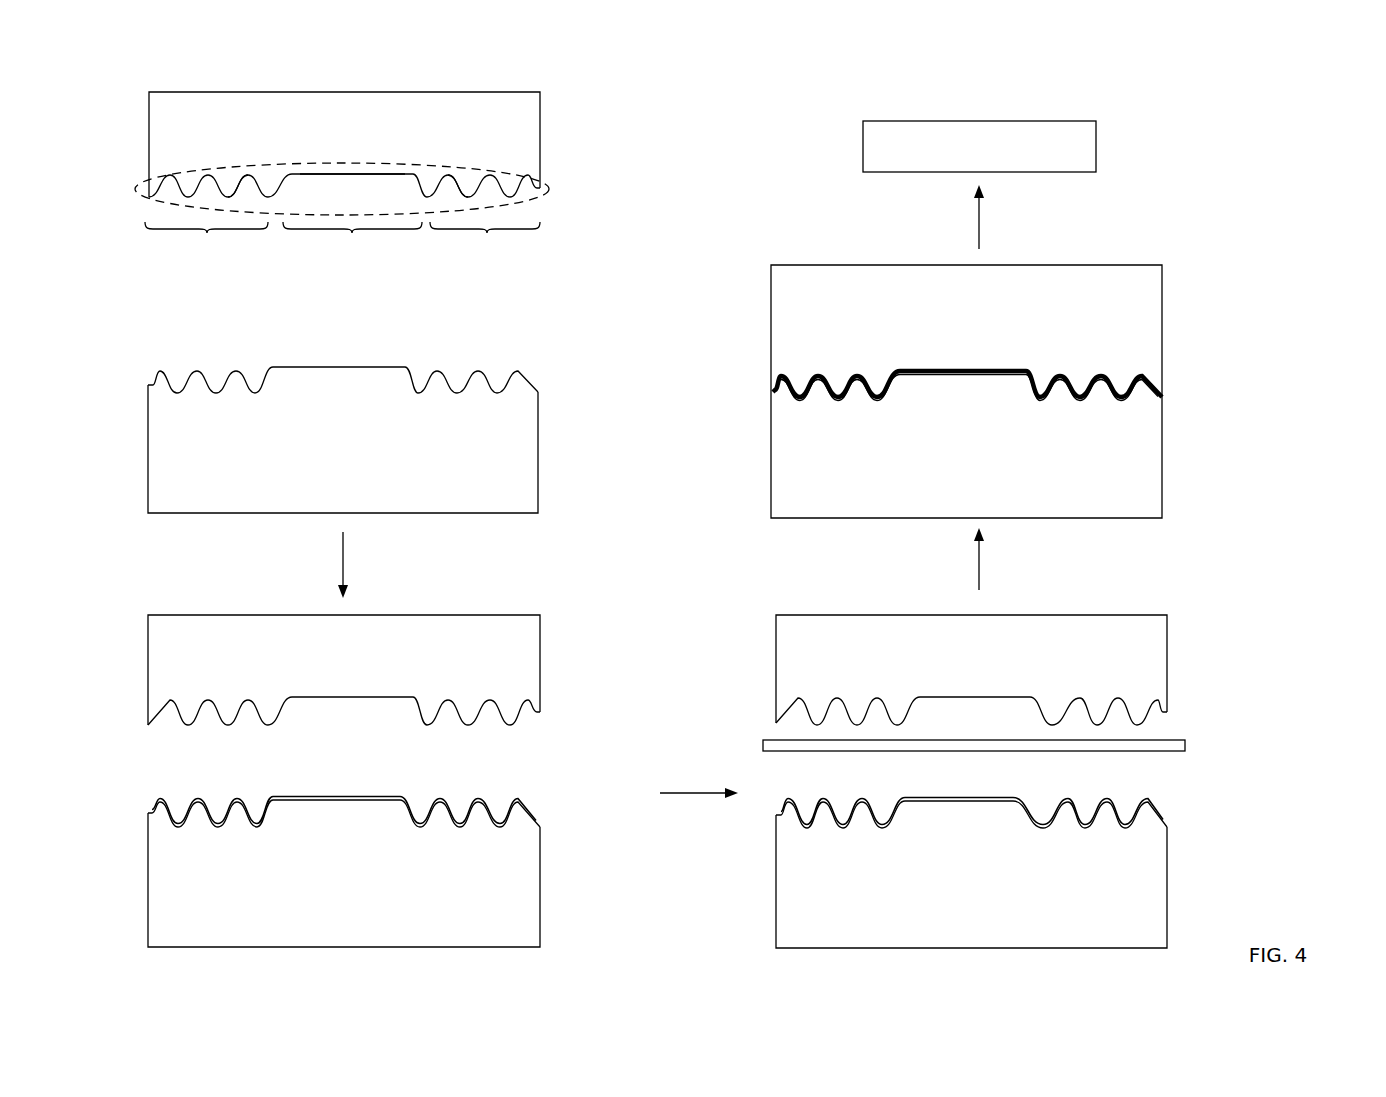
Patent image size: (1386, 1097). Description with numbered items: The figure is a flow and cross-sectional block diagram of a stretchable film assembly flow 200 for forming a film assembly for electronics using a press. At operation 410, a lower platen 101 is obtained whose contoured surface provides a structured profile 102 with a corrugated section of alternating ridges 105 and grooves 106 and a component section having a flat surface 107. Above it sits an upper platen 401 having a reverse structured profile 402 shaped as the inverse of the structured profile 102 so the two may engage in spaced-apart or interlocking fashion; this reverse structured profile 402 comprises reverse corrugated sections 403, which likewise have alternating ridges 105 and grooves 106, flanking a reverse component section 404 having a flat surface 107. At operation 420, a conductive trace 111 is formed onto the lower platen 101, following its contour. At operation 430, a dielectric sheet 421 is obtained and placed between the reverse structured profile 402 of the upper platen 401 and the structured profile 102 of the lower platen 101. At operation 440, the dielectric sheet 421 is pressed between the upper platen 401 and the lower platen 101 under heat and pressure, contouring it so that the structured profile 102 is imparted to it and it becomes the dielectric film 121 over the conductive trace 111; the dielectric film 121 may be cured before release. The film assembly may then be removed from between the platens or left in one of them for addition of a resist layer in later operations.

The stretchable film assembly flow 200 is at (205, 72).
The operation 410 is at (668, 88).
The operation 420 is at (660, 595).
The operation 430 is at (1288, 595).
The operation 440 is at (1306, 243).
The upper platen 401 is at (540, 135).
The lower platen 101 is at (713, 657).
The structured profile 102 is at (343, 423).
The reverse structured profile 402 is at (545, 190).
The reverse corrugated section 403 is at (344, 280).
The reverse component section 404 is at (352, 280).
The ridge 105 is at (234, 186).
The groove 106 is at (428, 149).
The flat surface 107 is at (347, 162).
The conductive trace 111 is at (1197, 790).
The dielectric sheet 421 is at (1185, 745).
The dielectric film 121 is at (1162, 372).